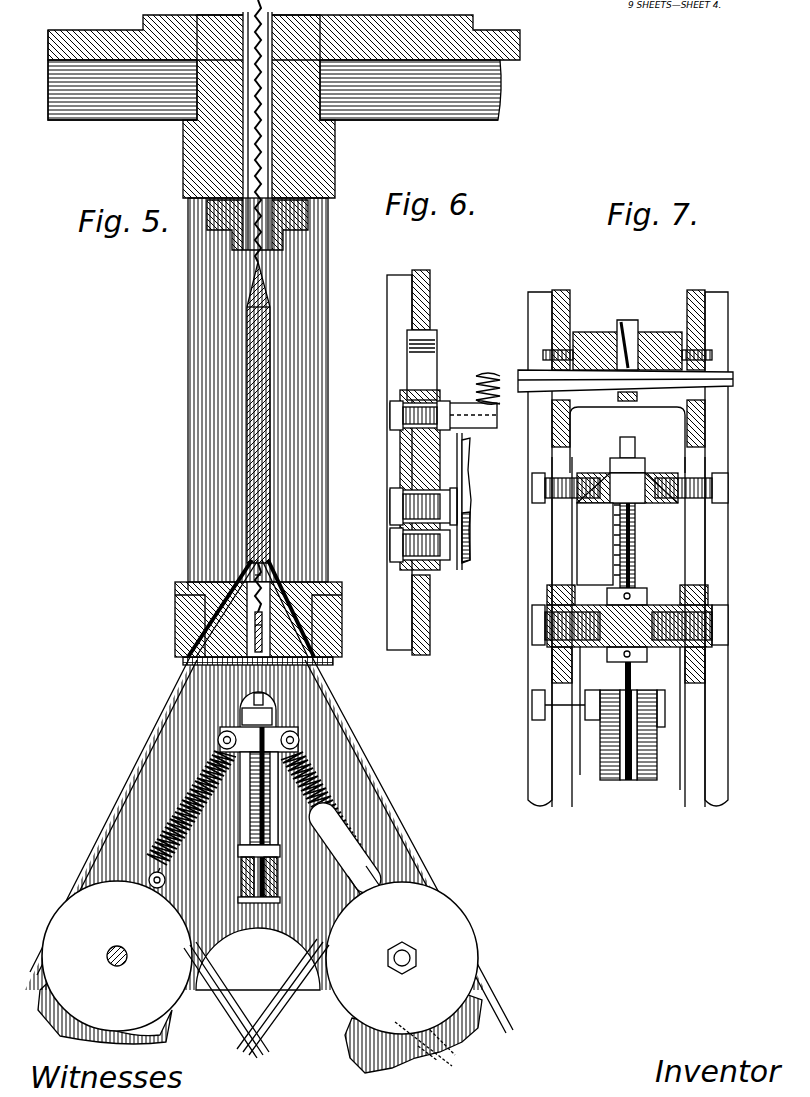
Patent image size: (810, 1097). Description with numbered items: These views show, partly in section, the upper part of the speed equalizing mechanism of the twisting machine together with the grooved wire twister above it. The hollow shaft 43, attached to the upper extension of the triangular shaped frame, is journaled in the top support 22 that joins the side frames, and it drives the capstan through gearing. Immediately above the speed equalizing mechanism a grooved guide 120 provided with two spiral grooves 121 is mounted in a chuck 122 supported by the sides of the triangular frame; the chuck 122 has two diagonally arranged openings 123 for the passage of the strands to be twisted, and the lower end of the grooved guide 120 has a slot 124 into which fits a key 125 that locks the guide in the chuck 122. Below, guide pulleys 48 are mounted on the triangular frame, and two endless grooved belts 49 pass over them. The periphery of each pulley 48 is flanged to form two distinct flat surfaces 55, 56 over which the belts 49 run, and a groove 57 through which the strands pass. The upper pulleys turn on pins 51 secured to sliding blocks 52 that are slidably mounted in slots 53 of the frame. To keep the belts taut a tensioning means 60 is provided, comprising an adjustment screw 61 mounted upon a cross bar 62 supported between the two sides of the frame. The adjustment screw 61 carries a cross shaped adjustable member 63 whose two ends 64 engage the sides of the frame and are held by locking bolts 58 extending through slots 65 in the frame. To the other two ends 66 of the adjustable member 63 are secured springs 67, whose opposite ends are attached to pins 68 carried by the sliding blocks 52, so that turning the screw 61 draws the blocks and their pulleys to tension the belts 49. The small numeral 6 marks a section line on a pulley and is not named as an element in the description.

In FIG. 5, the top support 22 is at (520, 48).
In FIG. 5, the hollow shaft 43 is at (232, 153).
In FIG. 5, the spiral grooves 121 is at (267, 387).
In FIG. 5, the grooved guide 120 is at (272, 572).
In FIG. 7, the grooved guide 120 is at (638, 325).
In FIG. 5, the chuck 122 is at (327, 592).
In FIG. 7, the chuck 122 is at (665, 368).
In FIG. 5, the diagonally arranged openings 123 is at (190, 640).
In FIG. 5, the slot 124 is at (200, 583).
In FIG. 7, the slot 124 is at (625, 360).
In FIG. 5, the key 125 is at (270, 625).
In FIG. 7, the key 125 is at (727, 375).
In FIG. 5, the adjustment screw 61 is at (300, 745).
In FIG. 7, the adjustment screw 61 is at (625, 440).
In FIG. 5, the ends of the adjustable member 66 is at (220, 728).
In FIG. 5, the springs 67 is at (186, 772).
In FIG. 6, the springs 67 is at (484, 376).
In FIG. 7, the springs 67 is at (615, 545).
In FIG. 5, the pins 68 is at (150, 884).
In FIG. 6, the pins 68 is at (463, 412).
In FIG. 5, the slots 53 is at (355, 833).
In FIG. 6, the slots 53 is at (420, 368).
In FIG. 5, the sliding blocks 52 is at (382, 874).
In FIG. 6, the sliding blocks 52 is at (403, 458).
In FIG. 5, the guide pulleys 48 is at (70, 908).
In FIG. 6, the guide pulleys 48 is at (458, 568).
In FIG. 5, the pins 51 is at (111, 950).
In FIG. 6, the pins 51 is at (395, 508).
In FIG. 7, the pins 51 is at (585, 710).
In FIG. 5, the endless grooved belts 49 is at (276, 1000).
In FIG. 5, the rail 6 is at (425, 1049).
In FIG. 7, the slots 65 is at (545, 560).
In FIG. 7, the ends of the adjustable member 64 is at (580, 472).
In FIG. 7, the cross shaped adjustable member 63 is at (640, 500).
In FIG. 7, the locking bolts 58 is at (532, 490).
In FIG. 7, the tensioning means 60 is at (595, 543).
In FIG. 7, the cross bar 62 is at (657, 610).
In FIG. 7, the flat surface 55 is at (612, 778).
In FIG. 7, the flat surface 56 is at (645, 778).
In FIG. 7, the groove 57 is at (628, 782).